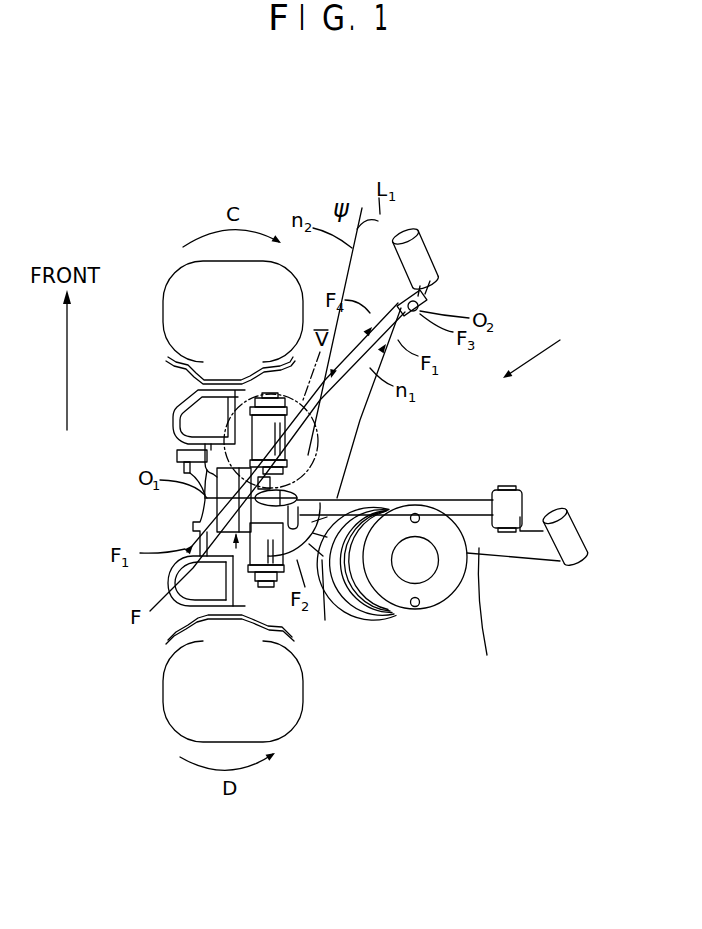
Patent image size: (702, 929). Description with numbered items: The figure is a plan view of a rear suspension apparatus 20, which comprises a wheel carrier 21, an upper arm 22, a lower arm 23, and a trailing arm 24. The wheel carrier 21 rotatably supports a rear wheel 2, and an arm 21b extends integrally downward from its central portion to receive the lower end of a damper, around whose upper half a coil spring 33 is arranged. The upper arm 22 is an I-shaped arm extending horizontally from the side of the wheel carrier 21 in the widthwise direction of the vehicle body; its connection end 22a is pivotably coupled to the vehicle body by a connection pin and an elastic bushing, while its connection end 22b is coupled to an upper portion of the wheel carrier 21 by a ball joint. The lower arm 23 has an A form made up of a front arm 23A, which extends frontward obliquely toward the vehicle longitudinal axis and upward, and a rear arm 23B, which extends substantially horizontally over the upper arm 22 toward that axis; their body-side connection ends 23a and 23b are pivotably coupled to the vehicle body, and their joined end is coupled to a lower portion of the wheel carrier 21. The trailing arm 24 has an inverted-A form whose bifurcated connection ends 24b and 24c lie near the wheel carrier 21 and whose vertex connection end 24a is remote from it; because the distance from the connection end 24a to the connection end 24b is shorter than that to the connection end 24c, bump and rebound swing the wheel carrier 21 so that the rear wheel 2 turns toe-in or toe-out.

The rear wheel 2 is at (175, 300).
The rear suspension apparatus 20 is at (549, 349).
The wheel carrier 21 is at (207, 502).
The arm 21b is at (327, 601).
The upper arm 22 is at (449, 497).
The connection end 22a is at (516, 497).
The connection end 22b is at (337, 495).
The lower arm 23 is at (525, 578).
The connection end 23a is at (428, 255).
The connection end 23b is at (572, 528).
The front arm 23A is at (368, 288).
The rear arm 23B is at (486, 614).
The trailing arm 24 is at (355, 450).
The connection end 24a is at (422, 304).
The connection end 24b is at (253, 433).
The connection end 24c is at (268, 583).
The coil spring 33 is at (389, 614).